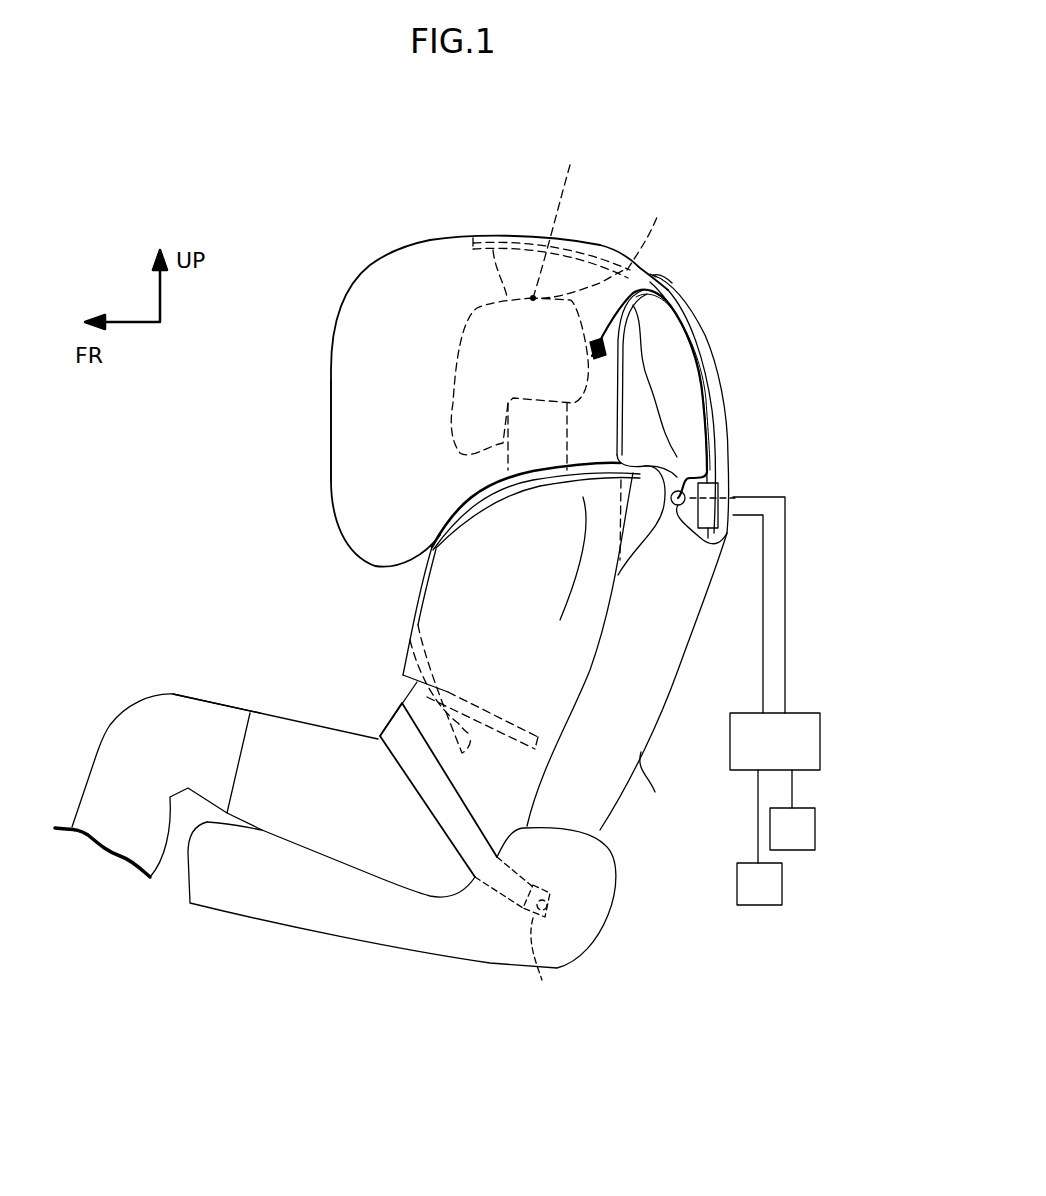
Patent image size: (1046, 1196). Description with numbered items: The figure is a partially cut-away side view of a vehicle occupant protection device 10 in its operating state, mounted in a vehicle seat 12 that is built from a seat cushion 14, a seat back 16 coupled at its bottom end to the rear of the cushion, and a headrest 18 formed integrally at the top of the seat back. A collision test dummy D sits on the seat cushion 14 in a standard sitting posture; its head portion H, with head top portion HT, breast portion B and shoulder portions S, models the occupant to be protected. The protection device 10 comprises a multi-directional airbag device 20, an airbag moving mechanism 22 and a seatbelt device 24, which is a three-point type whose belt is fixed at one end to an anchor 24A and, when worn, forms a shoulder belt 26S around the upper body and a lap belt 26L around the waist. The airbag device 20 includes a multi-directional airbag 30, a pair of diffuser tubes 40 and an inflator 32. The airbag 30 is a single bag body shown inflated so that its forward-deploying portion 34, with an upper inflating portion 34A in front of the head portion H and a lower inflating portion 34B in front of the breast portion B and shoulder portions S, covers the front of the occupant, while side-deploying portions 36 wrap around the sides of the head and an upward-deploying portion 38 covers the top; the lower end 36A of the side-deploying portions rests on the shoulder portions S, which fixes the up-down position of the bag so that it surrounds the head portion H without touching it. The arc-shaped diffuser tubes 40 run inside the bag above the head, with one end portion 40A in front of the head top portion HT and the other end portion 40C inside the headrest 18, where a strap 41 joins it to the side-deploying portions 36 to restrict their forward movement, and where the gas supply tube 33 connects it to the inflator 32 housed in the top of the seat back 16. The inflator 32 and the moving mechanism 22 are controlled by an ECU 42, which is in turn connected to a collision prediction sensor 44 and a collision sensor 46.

The vehicle occupant protection device 10 is at (808, 236).
The vehicle seat 12 is at (696, 608).
The seat cushion 14 is at (237, 917).
The seat back 16 is at (657, 793).
The headrest 18 is at (718, 370).
The multi-directional airbag device 20 is at (703, 286).
The airbag moving mechanism 22 is at (722, 450).
The seatbelt device 24 is at (446, 860).
The anchor 24A is at (525, 937).
The shoulder belt 26S is at (472, 515).
The lap belt 26L is at (396, 768).
The multi-directional airbag 30 is at (472, 331).
The inflator 32 is at (682, 512).
The gas supply tube 33 is at (707, 405).
The forward-deploying portion 34 is at (357, 332).
The upper inflating portion 34A is at (347, 408).
The lower inflating portion 34B is at (348, 546).
The side-deploying portions 36 is at (444, 292).
The lower end of side-deploying portions 36A is at (513, 477).
The upward-deploying portion 38 is at (528, 240).
The diffuser tubes 40 is at (580, 246).
The one end portion of diffuser tube 40A is at (554, 362).
The other end portion of diffuser tube 40C is at (653, 272).
The strap 41 is at (590, 346).
The ECU 42 is at (795, 712).
The collision prediction sensor 44 is at (805, 808).
The collision sensor 46 is at (765, 905).
The breast portion B is at (458, 506).
The collision test dummy D is at (277, 720).
The shoulder portions S is at (583, 497).
The head portion H is at (656, 214).
The head top portion HT is at (565, 155).